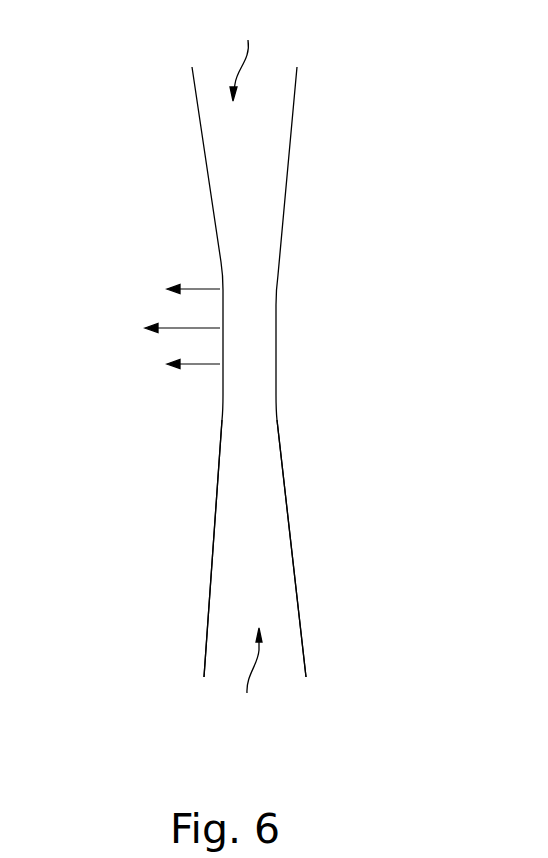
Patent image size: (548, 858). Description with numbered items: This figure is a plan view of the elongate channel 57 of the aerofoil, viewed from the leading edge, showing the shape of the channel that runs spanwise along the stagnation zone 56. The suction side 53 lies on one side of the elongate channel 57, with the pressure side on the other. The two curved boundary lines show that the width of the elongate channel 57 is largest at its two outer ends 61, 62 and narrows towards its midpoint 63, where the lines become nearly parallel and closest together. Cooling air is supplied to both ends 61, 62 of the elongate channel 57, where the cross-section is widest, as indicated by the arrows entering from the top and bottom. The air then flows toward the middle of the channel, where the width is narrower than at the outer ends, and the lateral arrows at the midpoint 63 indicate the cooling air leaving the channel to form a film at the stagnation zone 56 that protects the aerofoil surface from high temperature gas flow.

The suction surface 53 is at (346, 372).
The stagnation zone 56 is at (147, 372).
The elongate channel 57 is at (255, 548).
The outer end 61 is at (248, 55).
The outer end 62 is at (251, 678).
The midpoint 63 is at (206, 327).